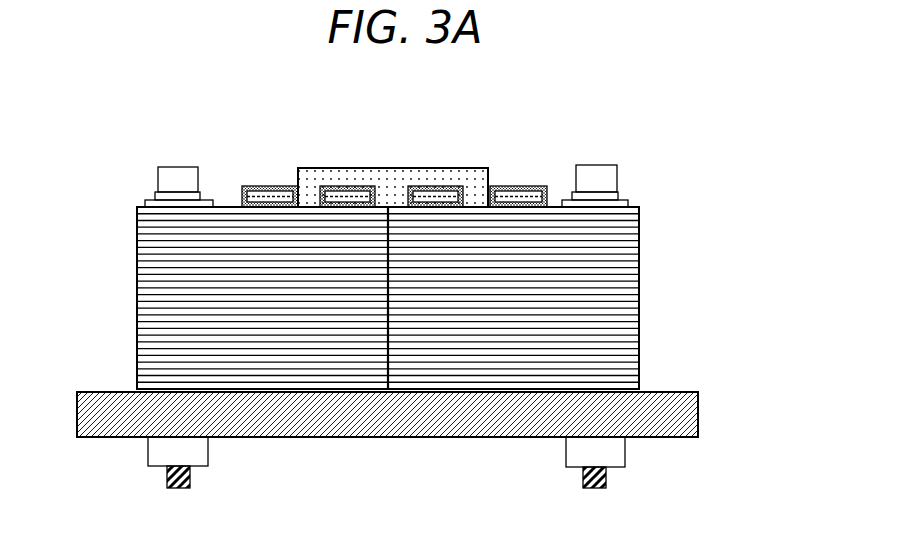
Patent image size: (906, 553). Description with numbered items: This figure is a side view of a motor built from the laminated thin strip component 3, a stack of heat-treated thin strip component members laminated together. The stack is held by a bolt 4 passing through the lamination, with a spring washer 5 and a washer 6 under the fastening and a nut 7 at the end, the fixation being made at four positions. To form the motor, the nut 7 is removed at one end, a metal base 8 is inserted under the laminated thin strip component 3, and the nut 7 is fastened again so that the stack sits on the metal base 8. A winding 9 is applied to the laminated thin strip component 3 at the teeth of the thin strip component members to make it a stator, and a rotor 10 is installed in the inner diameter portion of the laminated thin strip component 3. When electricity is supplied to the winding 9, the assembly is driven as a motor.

The laminated thin strip component 3 is at (130, 220).
The bolt 4 is at (617, 168).
The spring washer 5 is at (618, 192).
The washer 6 is at (628, 202).
The nut 7 is at (625, 468).
The metal base 8 is at (663, 392).
The winding 9 is at (260, 187).
The rotor 10 is at (400, 168).